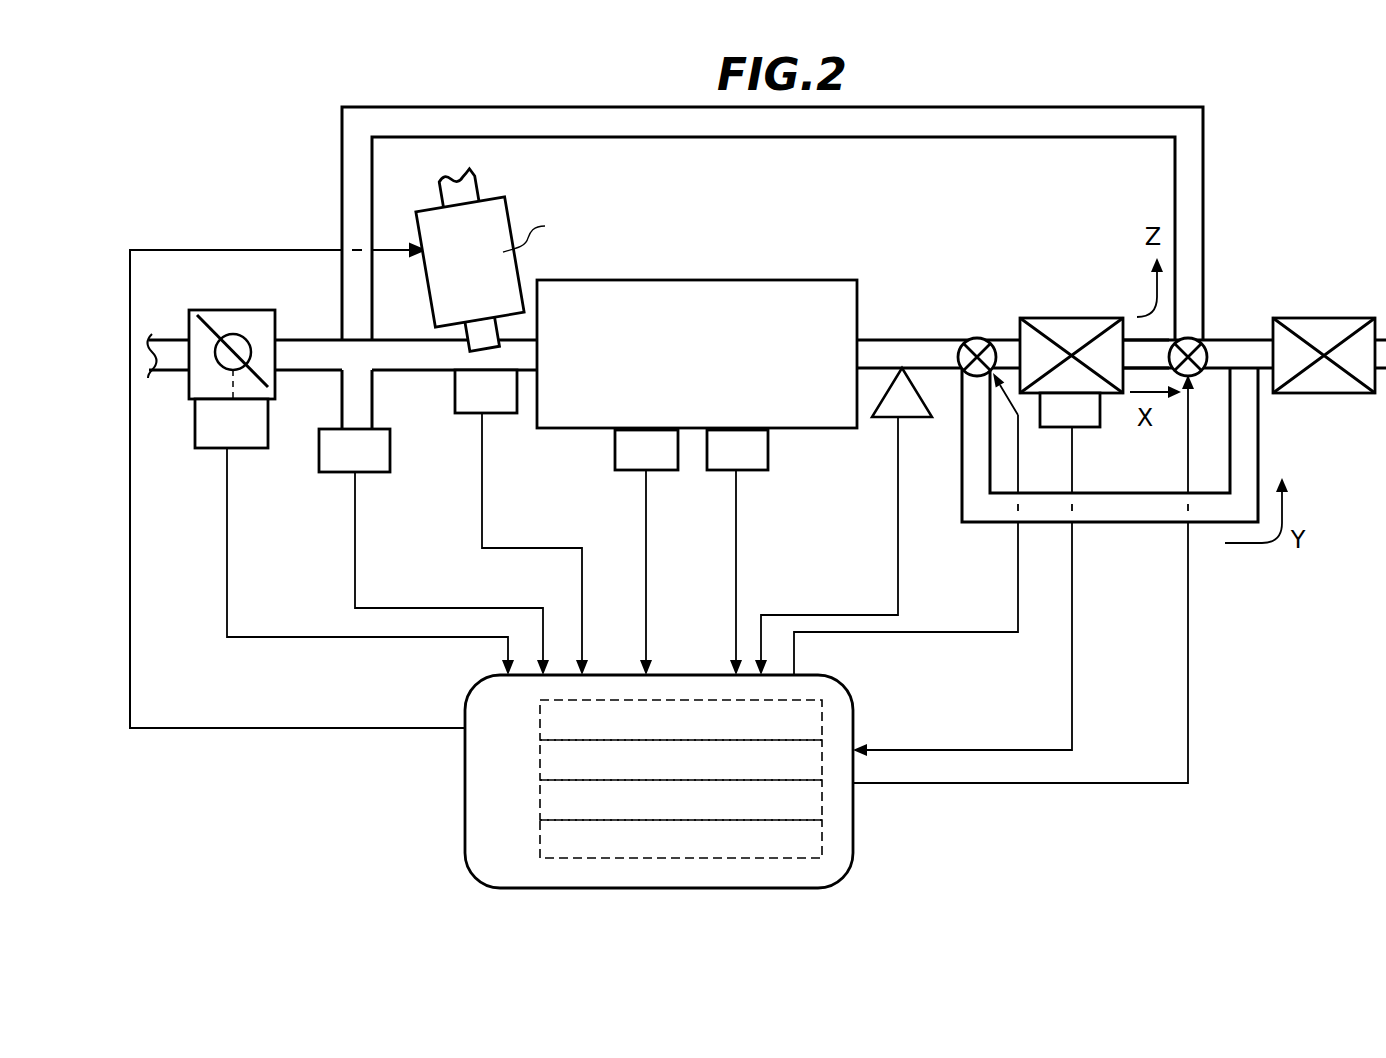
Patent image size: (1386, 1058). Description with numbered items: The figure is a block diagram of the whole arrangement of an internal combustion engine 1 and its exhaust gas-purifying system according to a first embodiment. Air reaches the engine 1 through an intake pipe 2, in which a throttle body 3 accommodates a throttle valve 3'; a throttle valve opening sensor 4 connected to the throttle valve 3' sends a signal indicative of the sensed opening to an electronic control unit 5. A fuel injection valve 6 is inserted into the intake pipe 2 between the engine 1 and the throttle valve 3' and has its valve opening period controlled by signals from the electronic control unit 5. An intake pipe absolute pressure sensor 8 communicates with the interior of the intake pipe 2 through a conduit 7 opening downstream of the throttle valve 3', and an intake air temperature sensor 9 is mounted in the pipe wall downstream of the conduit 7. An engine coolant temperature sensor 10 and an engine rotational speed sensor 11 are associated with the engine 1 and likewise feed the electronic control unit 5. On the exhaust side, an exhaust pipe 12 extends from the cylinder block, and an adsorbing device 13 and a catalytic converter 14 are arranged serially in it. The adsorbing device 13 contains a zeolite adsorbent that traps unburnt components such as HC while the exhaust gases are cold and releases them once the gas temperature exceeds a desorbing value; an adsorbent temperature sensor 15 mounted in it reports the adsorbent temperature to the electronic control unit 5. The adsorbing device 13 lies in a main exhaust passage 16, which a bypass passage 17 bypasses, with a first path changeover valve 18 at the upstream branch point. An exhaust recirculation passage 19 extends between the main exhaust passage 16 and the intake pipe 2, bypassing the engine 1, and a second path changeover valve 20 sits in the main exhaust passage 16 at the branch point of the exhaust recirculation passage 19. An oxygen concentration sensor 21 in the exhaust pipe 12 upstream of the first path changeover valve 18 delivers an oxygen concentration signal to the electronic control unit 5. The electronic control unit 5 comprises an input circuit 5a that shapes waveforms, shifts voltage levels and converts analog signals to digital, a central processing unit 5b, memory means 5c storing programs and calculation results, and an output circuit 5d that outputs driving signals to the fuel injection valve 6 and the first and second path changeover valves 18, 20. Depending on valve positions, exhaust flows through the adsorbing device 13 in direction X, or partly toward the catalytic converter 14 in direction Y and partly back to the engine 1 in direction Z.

The internal combustion engine 1 is at (824, 280).
The intake pipe 2 is at (396, 340).
The throttle body 3 is at (250, 334).
The throttle valve 3' is at (234, 325).
The throttle valve opening sensor 4 is at (268, 430).
The electronic control unit 5 is at (651, 762).
The input circuit 5a is at (822, 703).
The central processing unit 5b is at (822, 752).
The memory means 5c is at (822, 812).
The output circuit 5d is at (822, 845).
The fuel injection valve 6 is at (510, 204).
The conduit 7 is at (372, 396).
The intake pipe absolute pressure sensor 8 is at (390, 452).
The intake air temperature sensor 9 is at (497, 418).
The engine coolant temperature sensor 10 is at (615, 465).
The engine rotational speed sensor 11 is at (768, 465).
The exhaust pipe 12 is at (900, 339).
The adsorbing device 13 is at (1085, 318).
The catalytic converter 14 is at (1325, 394).
The adsorbent temperature sensor 15 is at (1070, 428).
The main exhaust passage 16 is at (1130, 339).
The bypass passage 17 is at (1120, 525).
The first path changeover valve 18 is at (980, 337).
The exhaust recirculation passage 19 is at (1203, 166).
The second path changeover valve 20 is at (1210, 337).
The oxygen concentration sensor 21 is at (887, 420).